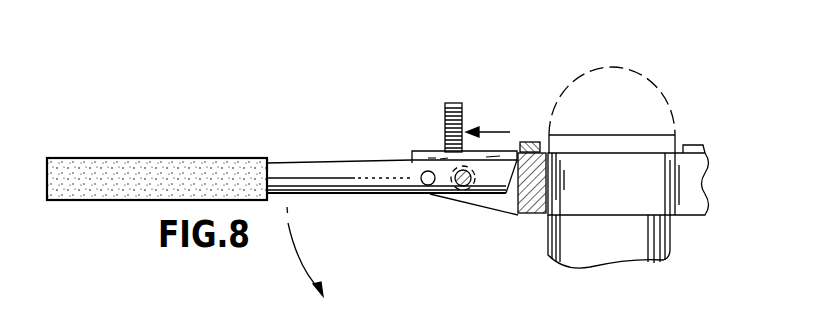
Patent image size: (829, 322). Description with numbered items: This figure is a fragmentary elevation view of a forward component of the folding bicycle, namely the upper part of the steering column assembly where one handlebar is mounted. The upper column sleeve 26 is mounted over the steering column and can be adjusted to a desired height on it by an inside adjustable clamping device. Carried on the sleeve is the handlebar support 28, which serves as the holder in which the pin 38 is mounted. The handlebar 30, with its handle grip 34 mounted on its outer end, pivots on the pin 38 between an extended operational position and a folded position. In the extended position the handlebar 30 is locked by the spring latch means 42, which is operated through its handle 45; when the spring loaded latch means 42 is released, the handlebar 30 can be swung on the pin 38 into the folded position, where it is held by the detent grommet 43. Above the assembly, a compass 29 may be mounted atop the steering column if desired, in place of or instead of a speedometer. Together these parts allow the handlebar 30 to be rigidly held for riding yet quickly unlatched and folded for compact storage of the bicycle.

The upper column sleeve 26 is at (548, 255).
The handlebar support 28 is at (531, 215).
The compass 29 is at (653, 82).
The handlebar 30 is at (356, 167).
The handle grip 34 is at (190, 163).
The pin 38 is at (463, 190).
The spring latch means 42 is at (509, 144).
The detent grommet 43 is at (423, 173).
The handle 45 is at (458, 115).